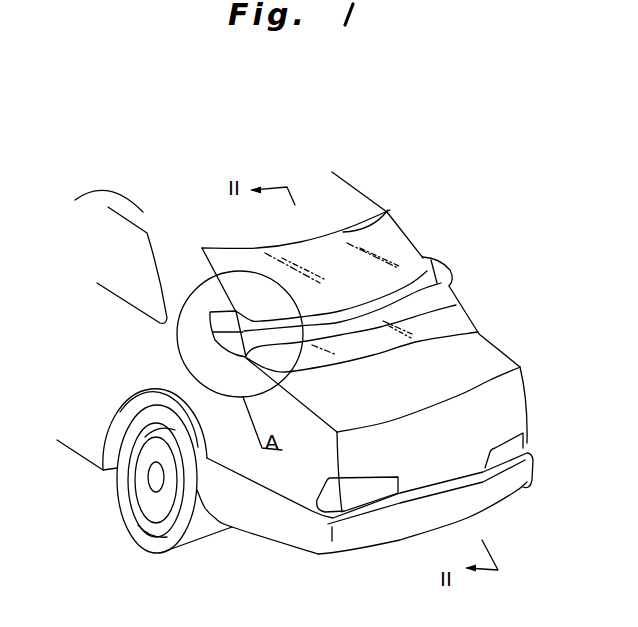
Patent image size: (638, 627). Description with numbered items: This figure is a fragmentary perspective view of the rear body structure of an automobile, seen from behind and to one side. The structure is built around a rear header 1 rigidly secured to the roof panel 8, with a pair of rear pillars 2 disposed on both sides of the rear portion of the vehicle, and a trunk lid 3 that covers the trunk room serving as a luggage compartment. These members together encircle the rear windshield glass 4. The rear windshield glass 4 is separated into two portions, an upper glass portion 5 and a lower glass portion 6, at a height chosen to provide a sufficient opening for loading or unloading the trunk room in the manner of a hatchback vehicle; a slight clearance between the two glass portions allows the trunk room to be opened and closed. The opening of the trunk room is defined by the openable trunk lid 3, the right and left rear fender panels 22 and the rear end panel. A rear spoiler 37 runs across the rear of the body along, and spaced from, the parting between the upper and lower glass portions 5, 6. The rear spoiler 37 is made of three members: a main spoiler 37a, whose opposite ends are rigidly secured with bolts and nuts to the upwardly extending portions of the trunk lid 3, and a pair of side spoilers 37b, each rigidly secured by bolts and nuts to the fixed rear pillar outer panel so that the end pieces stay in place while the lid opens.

The rear header 1 is at (392, 213).
The rear pillars 2 is at (173, 265).
The trunk lid 3 is at (477, 347).
The rear windshield glass 4 is at (397, 253).
The upper glass portion 5 is at (283, 250).
The lower glass portion 6 is at (370, 347).
The roof panel 8 is at (100, 205).
The rear fender panels 22 is at (287, 485).
The rear spoiler 37 is at (459, 277).
The main spoiler 37a is at (407, 310).
The side spoilers 37b is at (220, 332).